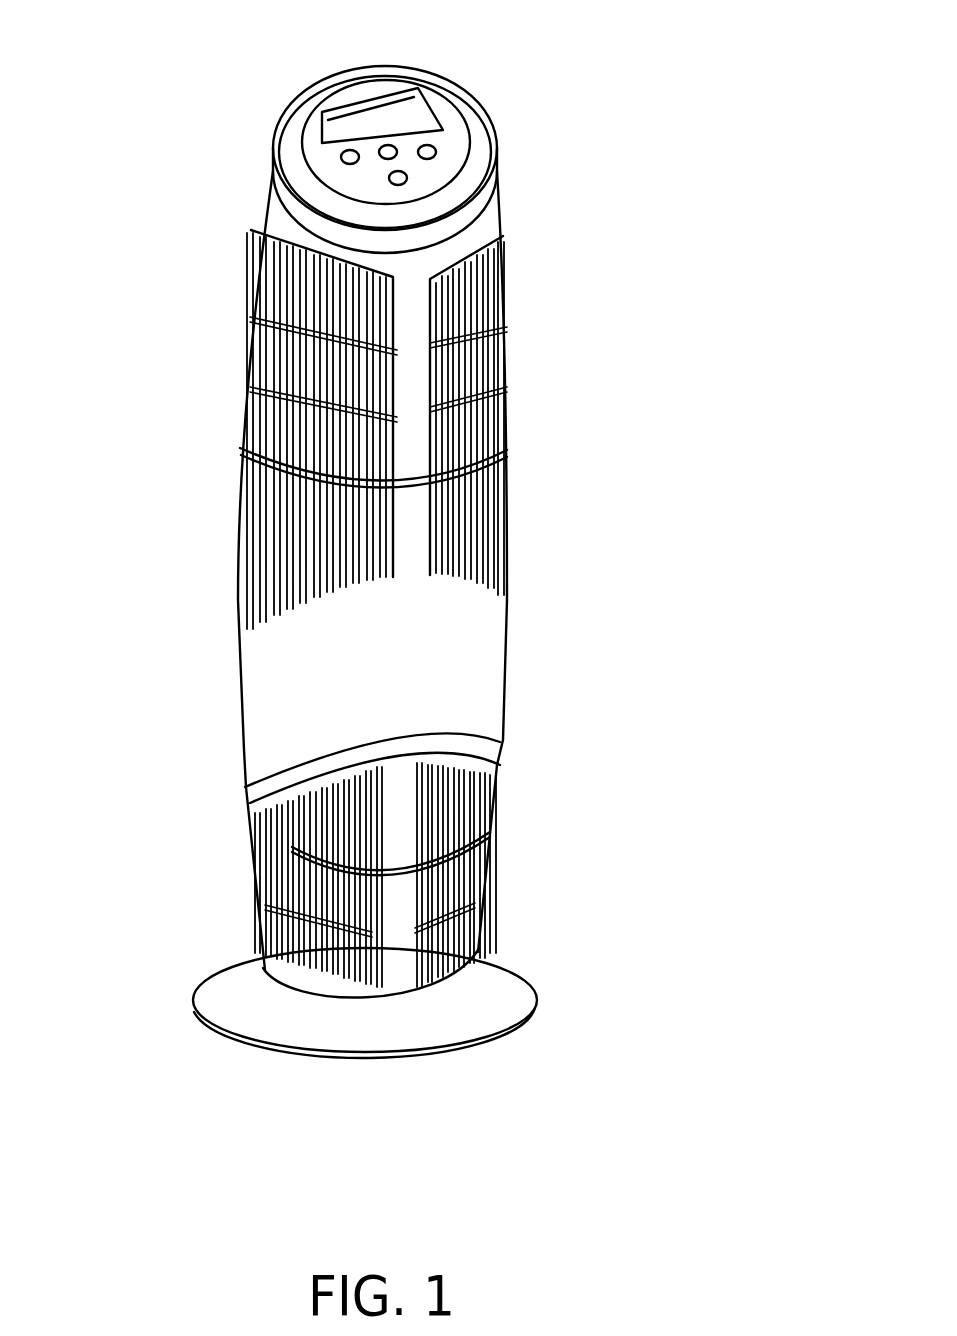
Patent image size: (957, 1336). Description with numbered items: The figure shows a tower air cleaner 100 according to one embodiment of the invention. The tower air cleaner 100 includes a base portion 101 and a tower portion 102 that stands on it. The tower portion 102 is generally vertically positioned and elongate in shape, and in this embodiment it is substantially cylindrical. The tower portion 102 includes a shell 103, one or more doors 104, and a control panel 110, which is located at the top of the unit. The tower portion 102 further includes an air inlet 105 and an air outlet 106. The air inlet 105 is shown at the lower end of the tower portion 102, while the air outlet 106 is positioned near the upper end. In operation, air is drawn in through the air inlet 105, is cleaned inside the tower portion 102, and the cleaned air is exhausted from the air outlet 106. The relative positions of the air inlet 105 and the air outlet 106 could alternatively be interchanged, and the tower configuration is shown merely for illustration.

The tower air cleaner 100 is at (432, 569).
The base portion 101 is at (222, 1037).
The tower portion 102 is at (393, 499).
The shell 103 is at (430, 126).
The door 104 is at (490, 667).
The air inlet 105 is at (573, 761).
The air outlet 106 is at (592, 215).
The control panel 110 is at (403, 92).